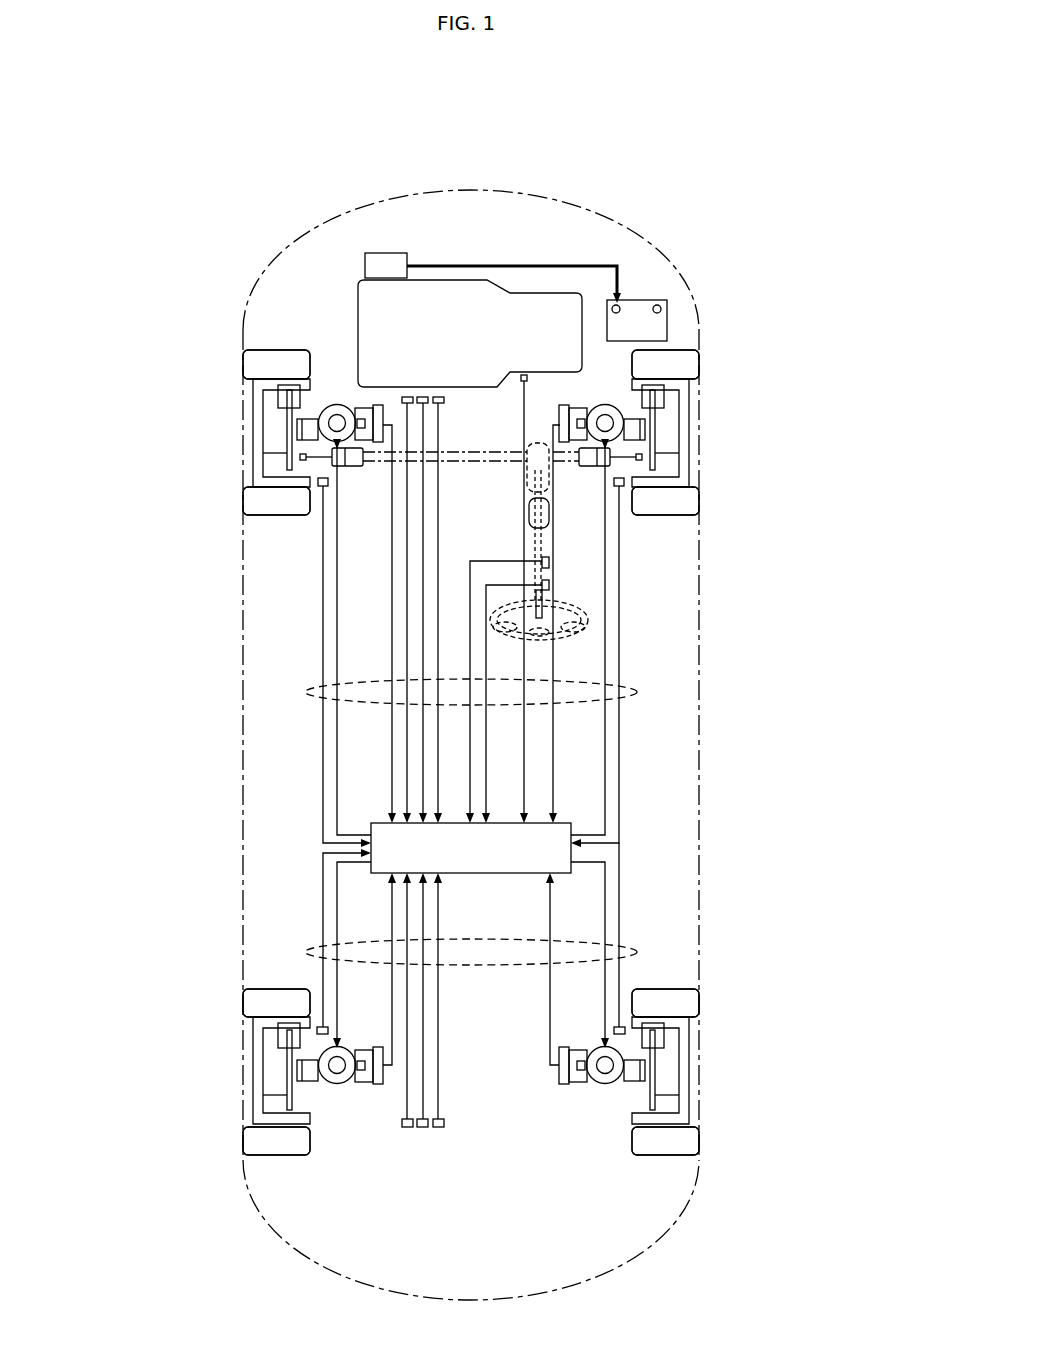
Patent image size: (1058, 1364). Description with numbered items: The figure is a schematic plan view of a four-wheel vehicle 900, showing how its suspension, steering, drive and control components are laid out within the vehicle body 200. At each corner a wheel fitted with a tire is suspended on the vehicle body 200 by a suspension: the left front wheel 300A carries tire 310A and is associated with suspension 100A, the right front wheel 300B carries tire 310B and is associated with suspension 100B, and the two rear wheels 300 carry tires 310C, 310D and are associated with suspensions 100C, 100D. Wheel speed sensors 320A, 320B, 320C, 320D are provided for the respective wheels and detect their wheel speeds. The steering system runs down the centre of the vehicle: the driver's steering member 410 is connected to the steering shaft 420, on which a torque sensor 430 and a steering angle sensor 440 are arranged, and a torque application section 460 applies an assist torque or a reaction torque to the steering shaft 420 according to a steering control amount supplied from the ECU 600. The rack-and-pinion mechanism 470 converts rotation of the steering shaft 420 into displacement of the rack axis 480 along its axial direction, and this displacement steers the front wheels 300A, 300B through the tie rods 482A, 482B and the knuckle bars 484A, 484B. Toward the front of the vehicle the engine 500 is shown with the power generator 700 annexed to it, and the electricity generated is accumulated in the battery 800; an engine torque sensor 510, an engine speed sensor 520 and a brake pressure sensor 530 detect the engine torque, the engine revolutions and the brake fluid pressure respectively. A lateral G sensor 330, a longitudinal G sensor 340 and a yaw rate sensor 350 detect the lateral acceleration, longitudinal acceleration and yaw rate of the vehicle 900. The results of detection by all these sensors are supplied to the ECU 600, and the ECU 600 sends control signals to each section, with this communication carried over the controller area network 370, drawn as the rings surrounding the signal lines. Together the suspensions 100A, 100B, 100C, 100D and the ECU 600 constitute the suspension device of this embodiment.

The vehicle 900 is at (673, 147).
The vehicle body 200 is at (685, 277).
The engine 500 is at (360, 327).
The engine torque sensor 510 is at (409, 396).
The engine speed sensor 520 is at (424, 396).
The brake pressure sensor 530 is at (439, 396).
The power generator 700 is at (395, 253).
The battery 800 is at (663, 328).
The wheel 300A is at (252, 391).
The wheel 300B is at (692, 391).
The wheels 300 is at (252, 1028).
The tire 310A is at (256, 504).
The tire 310B is at (686, 504).
The tire 310C is at (256, 1147).
The tire 310D is at (686, 1147).
The wheel speed sensor 320A is at (317, 483).
The wheel speed sensor 320B is at (626, 483).
The wheel speed sensor 320C is at (316, 1030).
The wheel speed sensor 320D is at (626, 1030).
The suspension 100A is at (316, 411).
The suspension 100B is at (626, 411).
The suspension 100C is at (314, 1095).
The suspension 100D is at (628, 1095).
The knuckle bar 484A is at (300, 457).
The knuckle bar 484B is at (640, 457).
The tie rod 482A is at (332, 460).
The tie rod 482B is at (610, 460).
The rack axis 480 is at (460, 451).
The rack-and-pinion mechanism 470 is at (527, 471).
The torque application section 460 is at (548, 515).
The torque sensor 430 is at (549, 562).
The steering angle sensor 440 is at (549, 585).
The steering shaft 420 is at (550, 594).
The steering member 410 is at (589, 625).
The controller area network (CAN) 370 is at (637, 952).
The electronic control unit (ECU) 600 is at (463, 874).
The lateral G sensor 330 is at (439, 1127).
The longitudinal G sensor 340 is at (423, 1127).
The yaw rate sensor 350 is at (407, 1127).